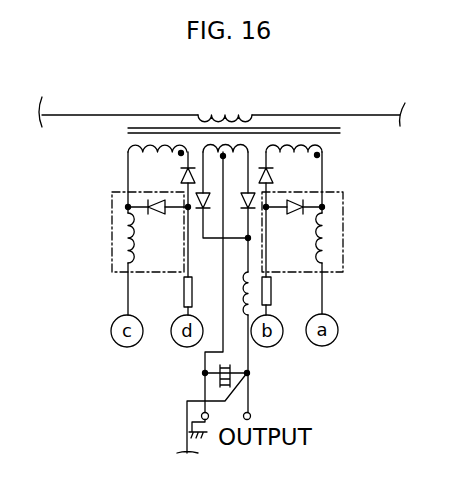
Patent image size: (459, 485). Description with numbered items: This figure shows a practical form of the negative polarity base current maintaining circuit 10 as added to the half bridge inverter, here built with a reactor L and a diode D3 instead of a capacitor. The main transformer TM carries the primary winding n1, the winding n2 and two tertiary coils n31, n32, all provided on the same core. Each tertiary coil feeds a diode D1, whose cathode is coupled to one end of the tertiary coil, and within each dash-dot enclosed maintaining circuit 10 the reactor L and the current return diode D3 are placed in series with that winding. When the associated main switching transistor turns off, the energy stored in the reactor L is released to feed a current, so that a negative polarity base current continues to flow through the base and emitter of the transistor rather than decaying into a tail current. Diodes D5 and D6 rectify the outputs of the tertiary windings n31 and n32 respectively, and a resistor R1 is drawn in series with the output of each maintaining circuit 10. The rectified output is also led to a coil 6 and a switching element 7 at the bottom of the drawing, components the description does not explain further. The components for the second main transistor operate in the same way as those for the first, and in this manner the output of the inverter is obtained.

The negative polarity base current maintaining circuit 10 is at (224, 243).
The relay coil winding 6 is at (246, 294).
The relay 7 is at (219, 369).
The main transformer TM is at (222, 124).
The winding n1 is at (231, 109).
The winding n2 is at (207, 146).
The tertiary coil n31 is at (320, 157).
The tertiary coil n32 is at (130, 153).
The diode D1 is at (181, 177).
The diode for current return D3 is at (223, 227).
The diode D5 is at (246, 212).
The diode D6 is at (203, 212).
The resistor R1 is at (184, 302).
The reactor L is at (330, 243).